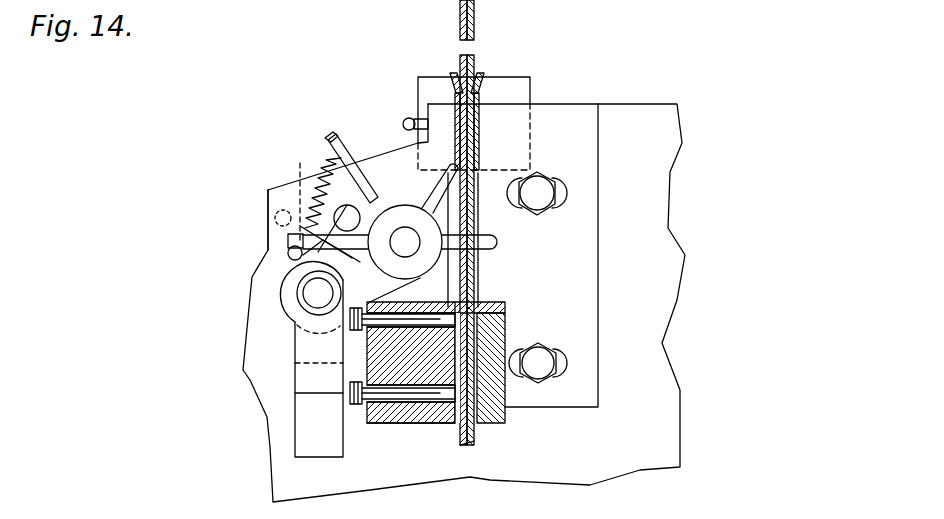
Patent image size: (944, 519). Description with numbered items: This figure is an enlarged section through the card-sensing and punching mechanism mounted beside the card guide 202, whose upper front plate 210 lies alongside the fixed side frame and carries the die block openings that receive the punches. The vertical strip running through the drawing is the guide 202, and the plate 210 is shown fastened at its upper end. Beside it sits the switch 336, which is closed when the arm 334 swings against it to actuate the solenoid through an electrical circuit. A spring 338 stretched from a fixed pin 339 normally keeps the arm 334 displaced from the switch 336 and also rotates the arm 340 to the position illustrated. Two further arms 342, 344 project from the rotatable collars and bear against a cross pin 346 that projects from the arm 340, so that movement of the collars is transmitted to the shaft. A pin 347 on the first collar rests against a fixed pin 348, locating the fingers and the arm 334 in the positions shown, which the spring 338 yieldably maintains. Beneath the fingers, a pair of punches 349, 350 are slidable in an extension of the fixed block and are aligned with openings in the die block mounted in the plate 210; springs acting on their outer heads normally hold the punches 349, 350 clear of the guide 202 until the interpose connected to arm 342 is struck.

The guide 202 is at (483, 53).
The upper front plate 210 is at (485, 88).
The switch 336 is at (532, 88).
The arm 334 is at (336, 138).
The spring 338 is at (307, 177).
The fixed pin 339 is at (268, 197).
The pin 347 is at (290, 240).
The fixed pin 348 is at (288, 253).
The arm 342 is at (283, 287).
The cross pin 346 is at (355, 196).
The arm 340 is at (407, 206).
The arm 344 is at (347, 253).
The punch 350 is at (350, 322).
The punch 349 is at (350, 412).